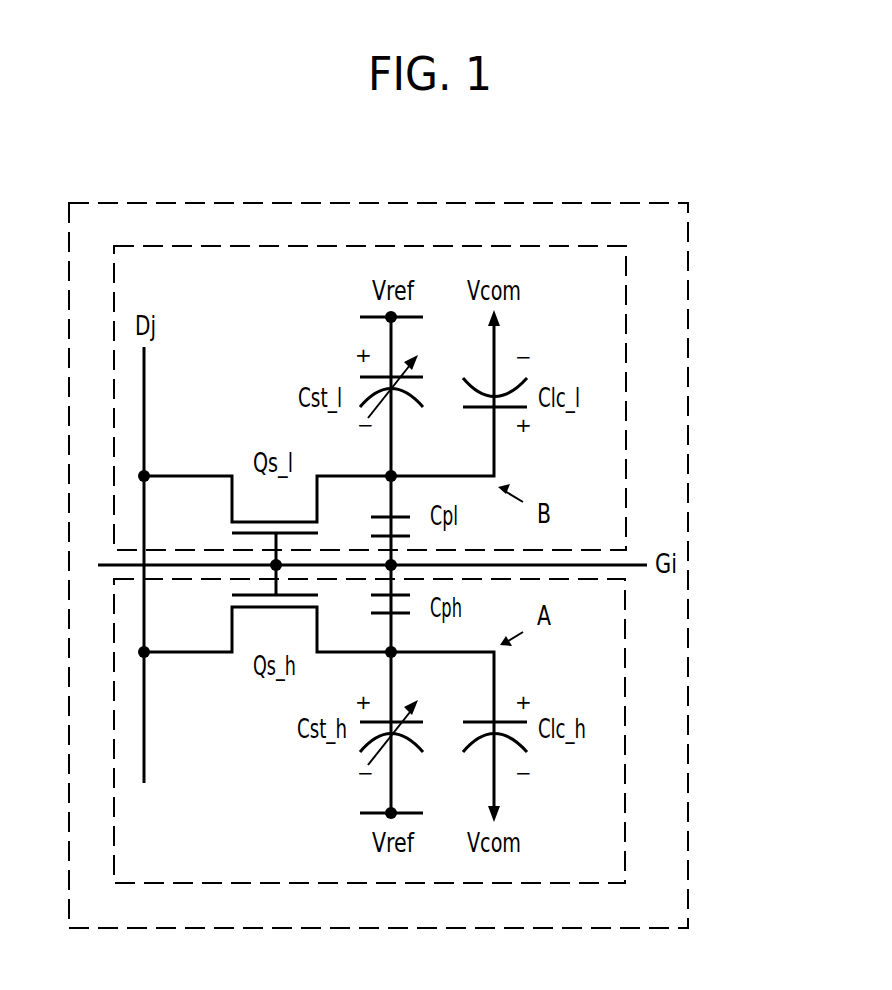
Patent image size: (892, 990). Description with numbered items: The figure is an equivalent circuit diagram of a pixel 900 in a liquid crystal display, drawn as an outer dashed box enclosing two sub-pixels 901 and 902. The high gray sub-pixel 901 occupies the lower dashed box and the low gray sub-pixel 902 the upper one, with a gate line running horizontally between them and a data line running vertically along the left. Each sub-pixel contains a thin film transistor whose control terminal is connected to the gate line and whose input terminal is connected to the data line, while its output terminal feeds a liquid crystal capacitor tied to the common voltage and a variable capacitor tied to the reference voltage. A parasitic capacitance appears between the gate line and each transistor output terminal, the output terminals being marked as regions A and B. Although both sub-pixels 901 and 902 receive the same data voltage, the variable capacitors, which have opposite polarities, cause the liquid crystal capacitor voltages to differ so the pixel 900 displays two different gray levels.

The pixel 900 is at (688, 253).
The high gray sub-pixel 901 is at (624, 765).
The low gray sub-pixel 902 is at (626, 365).